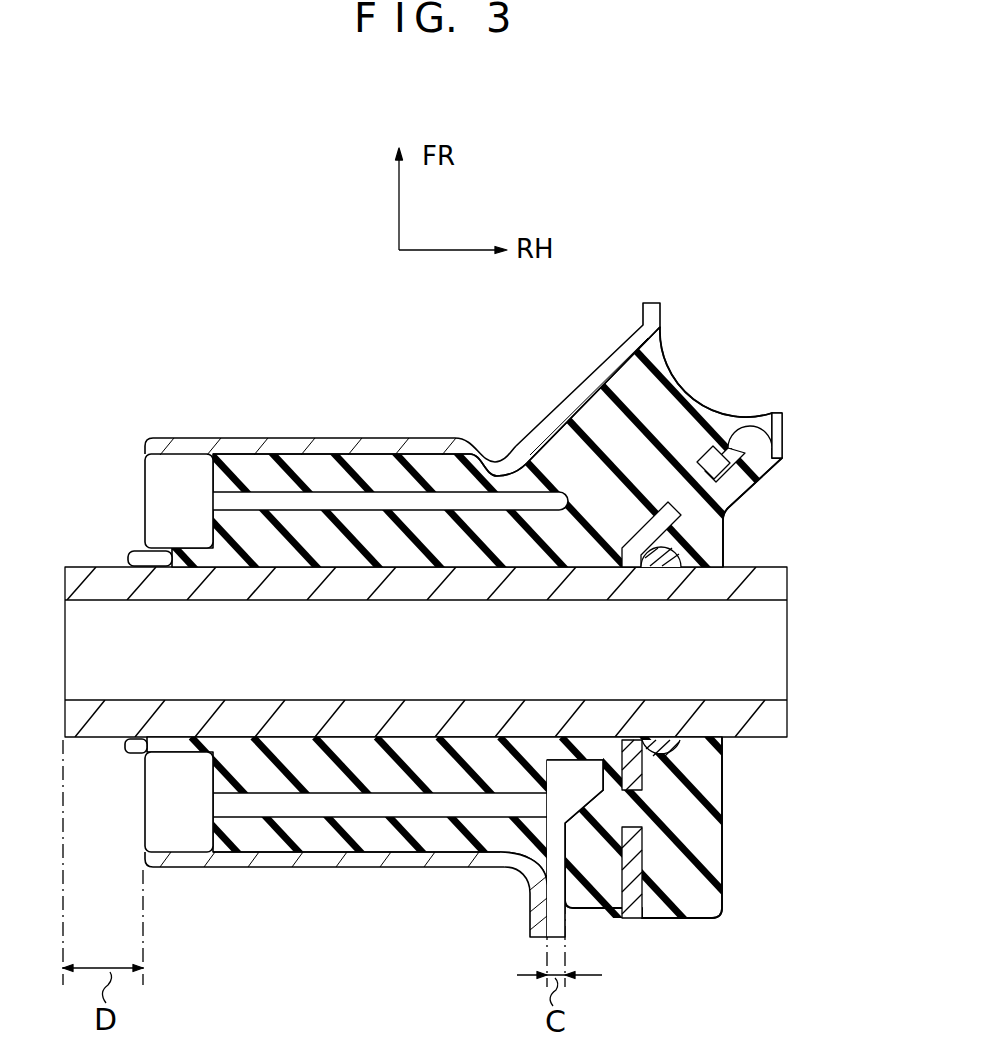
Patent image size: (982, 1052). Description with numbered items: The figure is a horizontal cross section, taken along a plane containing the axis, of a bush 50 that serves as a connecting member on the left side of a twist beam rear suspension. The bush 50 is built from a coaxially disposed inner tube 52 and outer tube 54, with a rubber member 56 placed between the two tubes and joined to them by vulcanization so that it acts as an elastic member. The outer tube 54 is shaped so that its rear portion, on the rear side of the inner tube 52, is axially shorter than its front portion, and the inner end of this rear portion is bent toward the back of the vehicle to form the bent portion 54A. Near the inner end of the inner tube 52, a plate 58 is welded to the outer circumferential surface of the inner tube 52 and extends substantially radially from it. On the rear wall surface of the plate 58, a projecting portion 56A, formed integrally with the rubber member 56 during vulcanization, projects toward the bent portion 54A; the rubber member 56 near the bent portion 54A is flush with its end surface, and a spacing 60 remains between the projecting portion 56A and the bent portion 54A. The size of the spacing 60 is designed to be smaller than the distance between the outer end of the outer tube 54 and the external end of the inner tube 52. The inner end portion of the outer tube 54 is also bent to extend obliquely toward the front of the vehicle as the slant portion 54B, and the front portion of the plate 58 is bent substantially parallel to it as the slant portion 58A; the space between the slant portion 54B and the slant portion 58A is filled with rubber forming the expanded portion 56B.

The bush 50 is at (705, 240).
The inner tube 52 is at (792, 583).
The outer tube 54 is at (392, 629).
The bent portion 54A is at (540, 928).
The slant portion of the outer tube 54B is at (590, 395).
The rubber member 56 is at (447, 641).
The projecting portion 56A is at (605, 887).
The expanded portion 56B is at (667, 417).
The plate 58 is at (775, 415).
The slant portion of the plate 58A is at (753, 477).
The spacing 60 is at (485, 872).